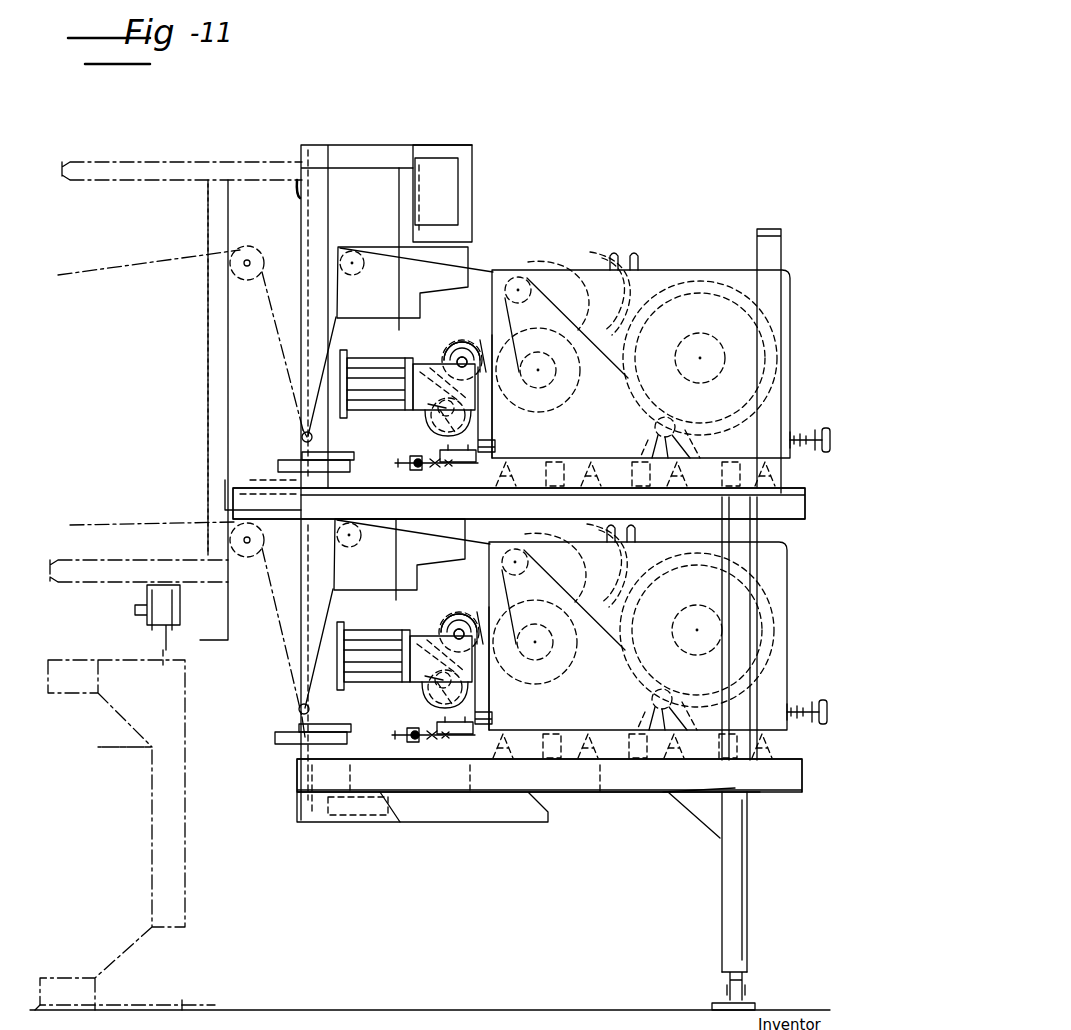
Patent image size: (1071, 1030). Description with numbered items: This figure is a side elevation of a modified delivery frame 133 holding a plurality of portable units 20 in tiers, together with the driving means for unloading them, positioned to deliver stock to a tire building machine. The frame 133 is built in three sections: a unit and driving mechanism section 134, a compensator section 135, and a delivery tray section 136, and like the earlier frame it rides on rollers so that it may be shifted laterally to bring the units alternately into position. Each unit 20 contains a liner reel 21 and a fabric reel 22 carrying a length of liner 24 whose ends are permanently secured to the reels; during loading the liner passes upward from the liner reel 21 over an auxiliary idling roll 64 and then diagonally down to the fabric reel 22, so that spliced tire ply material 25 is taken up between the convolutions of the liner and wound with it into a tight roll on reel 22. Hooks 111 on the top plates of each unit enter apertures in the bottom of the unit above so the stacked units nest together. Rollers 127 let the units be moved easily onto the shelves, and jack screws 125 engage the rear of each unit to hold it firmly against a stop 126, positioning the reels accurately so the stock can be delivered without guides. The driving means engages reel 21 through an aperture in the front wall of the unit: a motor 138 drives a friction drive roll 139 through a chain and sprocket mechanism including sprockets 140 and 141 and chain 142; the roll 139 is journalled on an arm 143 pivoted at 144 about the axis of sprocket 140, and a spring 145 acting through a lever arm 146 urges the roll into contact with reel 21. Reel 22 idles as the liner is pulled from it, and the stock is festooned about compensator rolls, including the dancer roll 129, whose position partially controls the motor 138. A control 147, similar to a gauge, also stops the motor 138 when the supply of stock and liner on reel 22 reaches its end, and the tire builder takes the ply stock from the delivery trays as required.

The portable unit 20 is at (645, 268).
The liner reel 21 is at (592, 272).
The fabric reel 22 is at (688, 275).
The liner 24 is at (597, 252).
The spliced tire ply material 25 is at (180, 463).
The auxiliary idling roll 64 is at (537, 262).
The hooks 111 is at (636, 252).
The jack screws 125 is at (830, 425).
The stop 126 is at (495, 447).
The rollers 127 is at (498, 468).
The dancer roll 129 is at (300, 440).
The delivery frame 133 is at (720, 864).
The unit and driving mechanism section 134 is at (487, 335).
The compensator section 135 is at (300, 430).
The delivery tray section 136 is at (202, 340).
The motor 138 is at (345, 378).
The friction drive roll 139 is at (480, 340).
The sprocket 140 is at (462, 362).
The sprocket 141 is at (476, 342).
The chain 142 is at (480, 412).
The arm 143 is at (464, 350).
The pivot 144 is at (440, 408).
The spring 145 is at (410, 466).
The lever arm 146 is at (440, 455).
The control means 147 is at (655, 505).